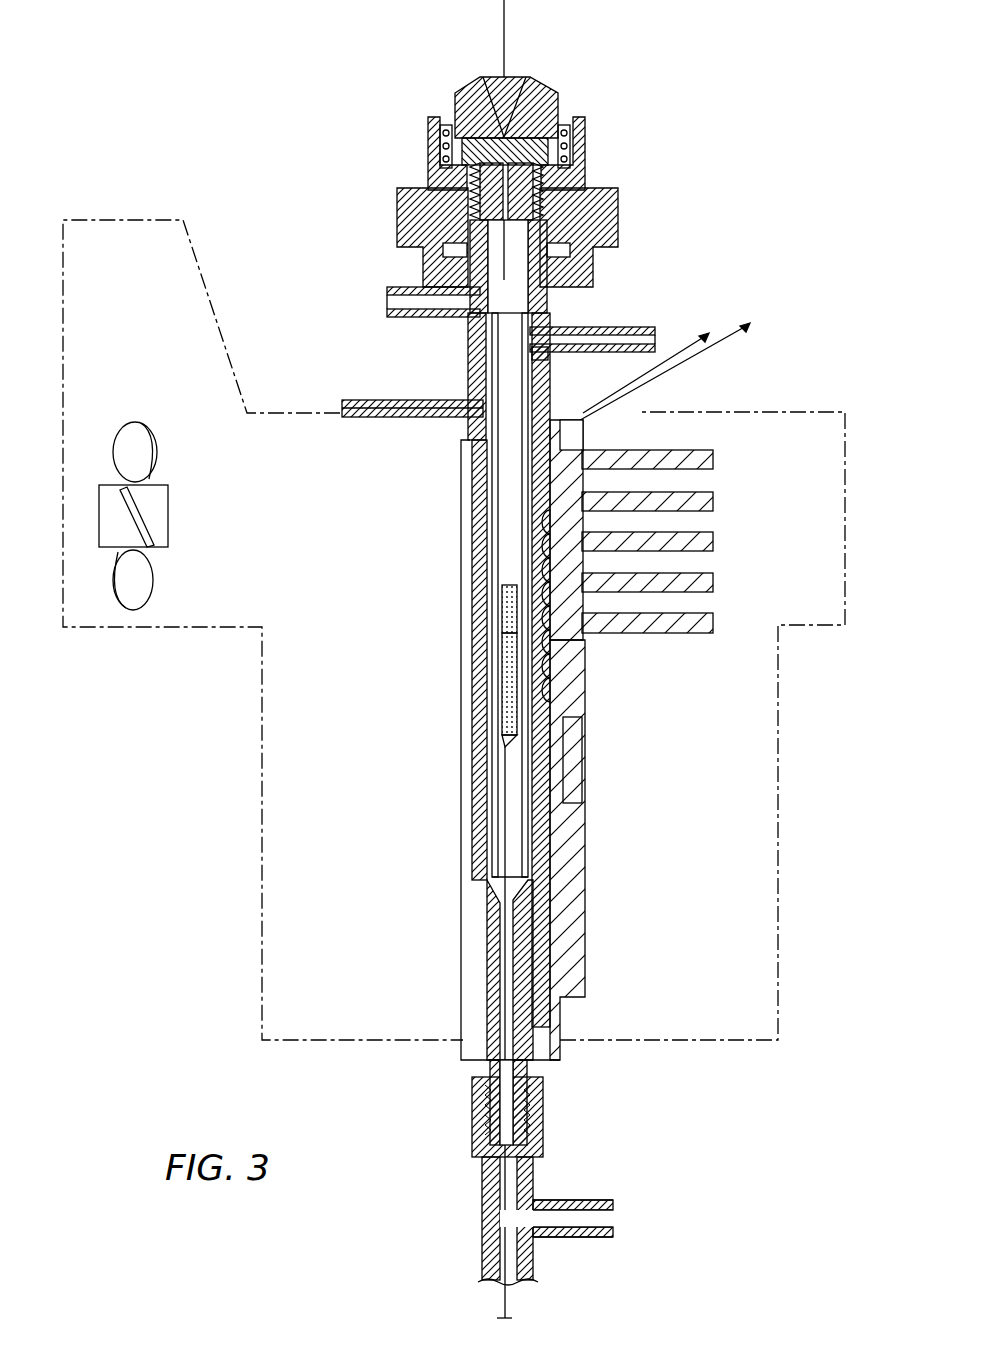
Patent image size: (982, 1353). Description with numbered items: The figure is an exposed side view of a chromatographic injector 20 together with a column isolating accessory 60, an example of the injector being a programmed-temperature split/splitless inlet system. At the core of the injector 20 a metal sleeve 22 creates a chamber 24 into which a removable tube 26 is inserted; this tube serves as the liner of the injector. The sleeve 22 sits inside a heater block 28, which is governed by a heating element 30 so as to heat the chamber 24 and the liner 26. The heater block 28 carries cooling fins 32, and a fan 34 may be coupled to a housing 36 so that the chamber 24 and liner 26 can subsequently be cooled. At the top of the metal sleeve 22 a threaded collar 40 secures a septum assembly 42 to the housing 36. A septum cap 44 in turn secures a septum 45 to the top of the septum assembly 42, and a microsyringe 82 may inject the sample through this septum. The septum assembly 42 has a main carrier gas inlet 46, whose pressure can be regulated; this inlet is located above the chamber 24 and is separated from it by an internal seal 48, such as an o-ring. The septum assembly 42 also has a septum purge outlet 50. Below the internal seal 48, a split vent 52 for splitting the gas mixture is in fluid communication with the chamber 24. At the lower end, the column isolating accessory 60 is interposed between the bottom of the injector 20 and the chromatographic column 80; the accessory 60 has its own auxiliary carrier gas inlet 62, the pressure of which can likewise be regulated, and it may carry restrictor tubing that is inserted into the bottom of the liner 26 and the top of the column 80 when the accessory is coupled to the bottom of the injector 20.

The injector 20 is at (381, 130).
The metal sleeve 22 is at (486, 880).
The chamber 24 is at (490, 833).
The removable tube 26 is at (497, 762).
The heater block 28 is at (585, 893).
The heating element 30 is at (580, 436).
The cooling fins 32 is at (713, 540).
The fan 34 is at (170, 500).
The housing 36 is at (250, 885).
The threaded collar 40 is at (397, 205).
The septum assembly 42 is at (465, 362).
The septum cap 44 is at (545, 86).
The septum 45 is at (565, 118).
The main carrier gas inlet 46 is at (640, 326).
The internal seal 48 is at (548, 360).
The septum purge outlet 50 is at (388, 296).
The split vent 52 is at (375, 418).
The column isolating accessory 60 is at (470, 1138).
The auxiliary carrier gas inlet 62 is at (578, 1203).
The chromatographic column 80 is at (510, 1275).
The microsyringe 82 is at (523, 275).